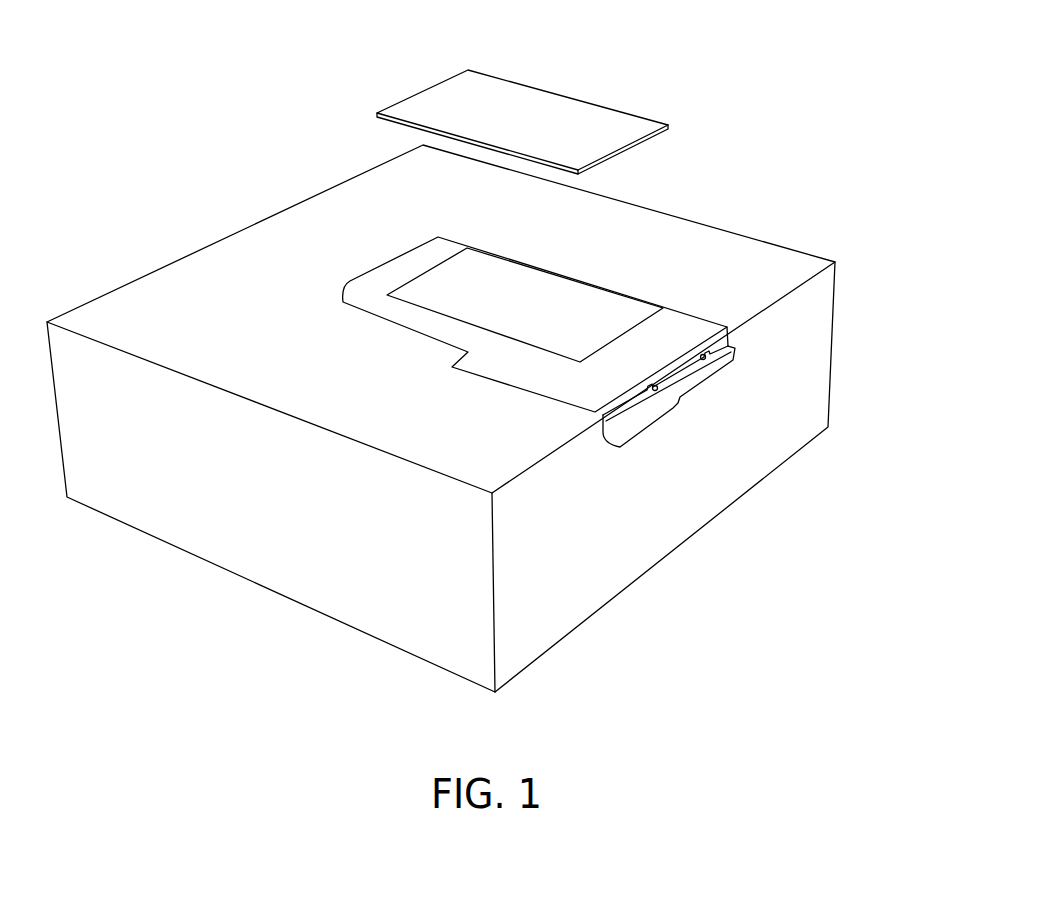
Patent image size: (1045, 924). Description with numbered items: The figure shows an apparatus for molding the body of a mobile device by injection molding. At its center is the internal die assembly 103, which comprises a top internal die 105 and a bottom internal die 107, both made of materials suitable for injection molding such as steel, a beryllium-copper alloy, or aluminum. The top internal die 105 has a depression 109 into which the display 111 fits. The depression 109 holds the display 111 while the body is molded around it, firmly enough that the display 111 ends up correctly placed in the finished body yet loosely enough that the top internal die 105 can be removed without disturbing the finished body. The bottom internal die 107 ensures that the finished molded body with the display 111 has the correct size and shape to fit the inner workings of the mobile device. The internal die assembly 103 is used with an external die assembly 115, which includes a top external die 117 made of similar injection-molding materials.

The internal die assembly 103 is at (679, 403).
The top internal die 105 is at (692, 332).
The bottom internal die 107 is at (603, 416).
The depression 109 is at (623, 316).
The display 111 is at (582, 103).
The external die assembly 115 is at (856, 244).
The top external die 117 is at (831, 353).